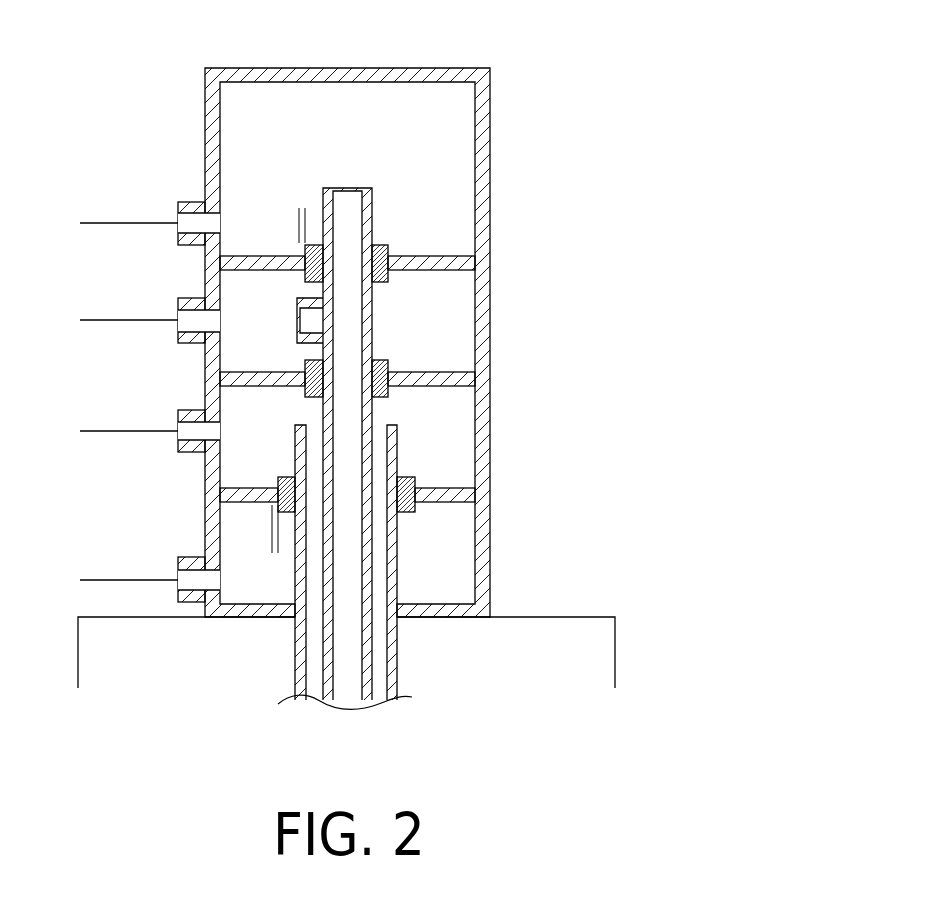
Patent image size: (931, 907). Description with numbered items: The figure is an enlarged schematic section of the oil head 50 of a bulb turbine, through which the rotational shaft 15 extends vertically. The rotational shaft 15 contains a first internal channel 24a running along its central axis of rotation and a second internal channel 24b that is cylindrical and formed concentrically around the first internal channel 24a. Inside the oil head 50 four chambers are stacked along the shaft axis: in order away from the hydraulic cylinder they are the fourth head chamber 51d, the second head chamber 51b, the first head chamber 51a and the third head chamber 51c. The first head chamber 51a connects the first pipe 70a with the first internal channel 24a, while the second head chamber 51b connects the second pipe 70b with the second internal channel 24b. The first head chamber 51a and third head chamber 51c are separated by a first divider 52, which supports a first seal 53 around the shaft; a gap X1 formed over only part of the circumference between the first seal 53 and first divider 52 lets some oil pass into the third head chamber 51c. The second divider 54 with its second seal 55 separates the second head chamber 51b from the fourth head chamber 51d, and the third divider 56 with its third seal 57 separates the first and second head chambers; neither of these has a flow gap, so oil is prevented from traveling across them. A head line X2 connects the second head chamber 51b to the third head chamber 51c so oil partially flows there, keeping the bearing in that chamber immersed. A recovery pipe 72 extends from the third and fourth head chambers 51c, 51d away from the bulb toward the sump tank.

The oil head 50 is at (508, 87).
The first head chamber 51a is at (455, 298).
The second head chamber 51b is at (460, 407).
The third head chamber 51c is at (447, 170).
The fourth head chamber 51d is at (460, 520).
The first divider 52 is at (247, 269).
The first seal 53 is at (384, 245).
The second divider 54 is at (245, 487).
The second seal 55 is at (417, 512).
The third divider 56 is at (240, 387).
The third seal 57 is at (390, 396).
The first internal channel 24a is at (347, 310).
The second internal channel 24b is at (380, 650).
The first pipe 70a is at (132, 320).
The second pipe 70b is at (130, 431).
The recovery pipe 72 is at (132, 223).
The rotational shaft 15 is at (293, 672).
The gap X1 is at (322, 221).
The head line X2 is at (300, 538).